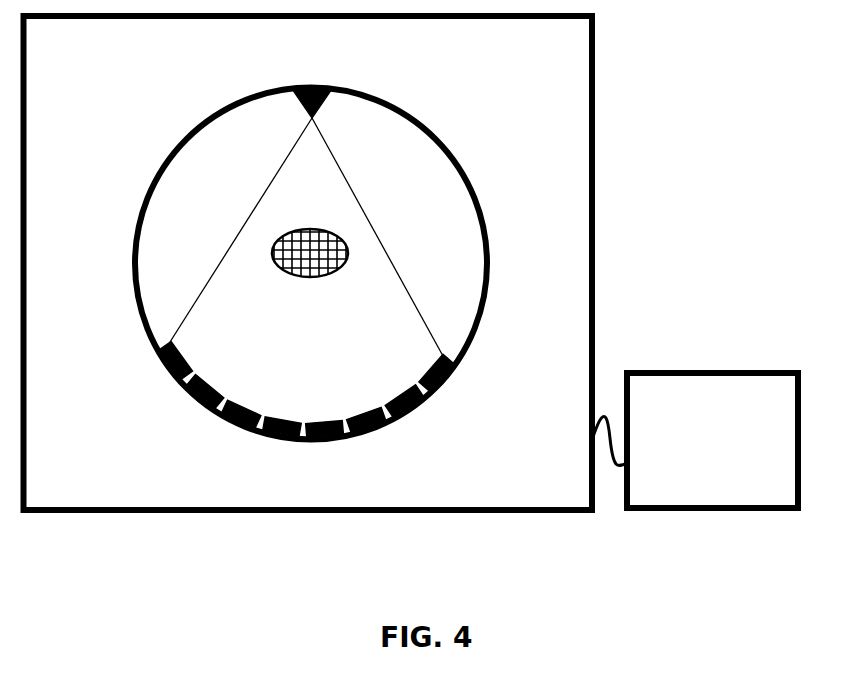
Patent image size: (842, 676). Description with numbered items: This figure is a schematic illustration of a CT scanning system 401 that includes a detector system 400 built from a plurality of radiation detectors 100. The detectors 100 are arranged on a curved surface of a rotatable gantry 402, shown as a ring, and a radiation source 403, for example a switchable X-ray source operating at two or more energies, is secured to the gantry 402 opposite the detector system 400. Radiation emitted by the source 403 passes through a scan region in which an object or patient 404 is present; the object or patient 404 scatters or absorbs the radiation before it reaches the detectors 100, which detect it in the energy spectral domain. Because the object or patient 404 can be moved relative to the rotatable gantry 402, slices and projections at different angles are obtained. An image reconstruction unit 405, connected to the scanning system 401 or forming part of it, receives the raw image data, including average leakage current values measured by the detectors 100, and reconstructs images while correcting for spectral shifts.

The radiation detector 100 is at (206, 382).
The detector system 400 is at (275, 386).
The CT scanning system 401 is at (593, 512).
The rotatable gantry 402 is at (478, 320).
The radiation source 403 is at (318, 108).
The object or patient 404 is at (311, 229).
The image reconstruction unit 405 is at (750, 372).